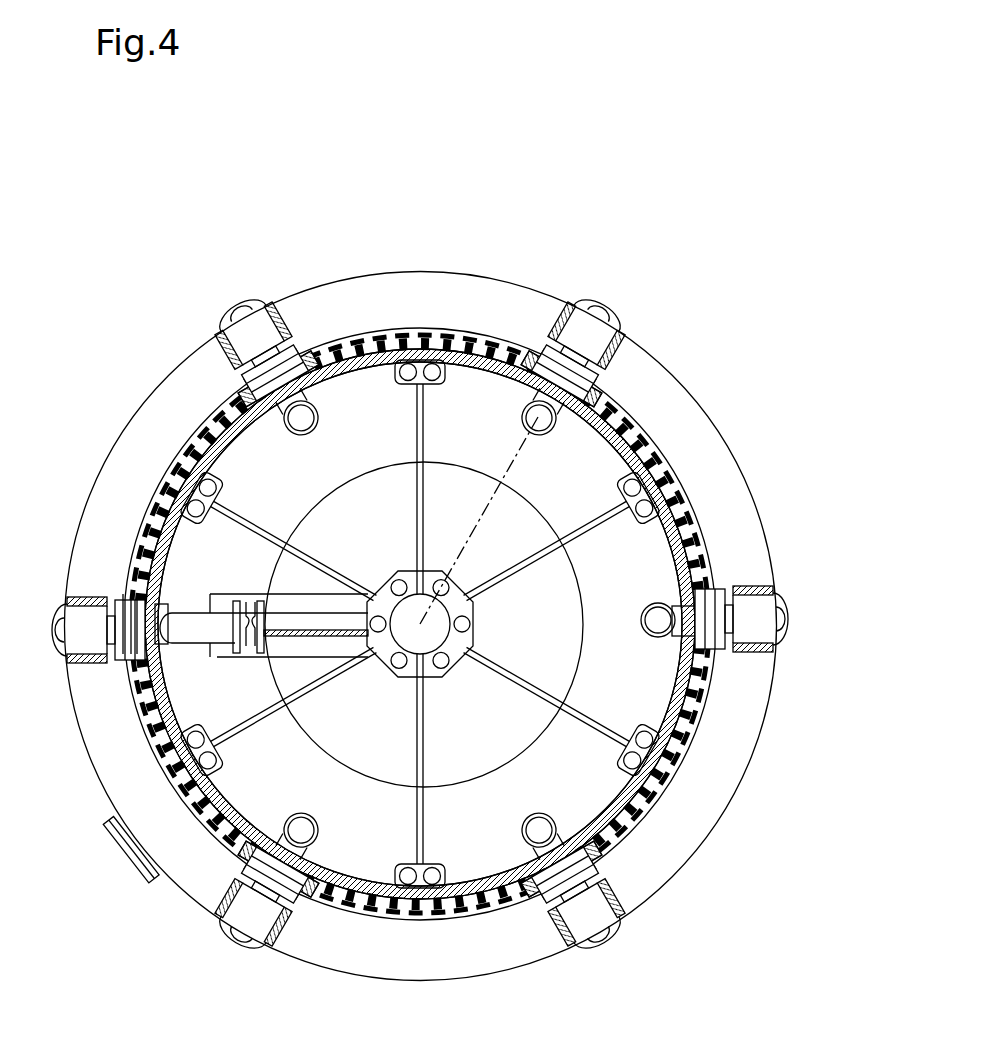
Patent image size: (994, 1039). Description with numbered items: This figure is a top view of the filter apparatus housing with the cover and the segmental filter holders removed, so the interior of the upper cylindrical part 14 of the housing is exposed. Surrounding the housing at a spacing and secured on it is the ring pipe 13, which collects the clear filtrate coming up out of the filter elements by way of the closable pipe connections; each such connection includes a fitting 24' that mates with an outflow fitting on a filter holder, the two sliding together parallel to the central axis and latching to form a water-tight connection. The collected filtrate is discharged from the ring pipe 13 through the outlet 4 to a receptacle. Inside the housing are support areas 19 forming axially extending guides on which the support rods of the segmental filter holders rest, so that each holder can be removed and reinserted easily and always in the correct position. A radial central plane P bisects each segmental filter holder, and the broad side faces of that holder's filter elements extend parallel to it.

The outlet 4 is at (87, 854).
The ring pipe 13 is at (391, 626).
The upper cylindrical part 14 is at (420, 518).
The support areas 19 is at (668, 772).
The fitting 24' is at (283, 447).
The radial central plane P is at (495, 520).